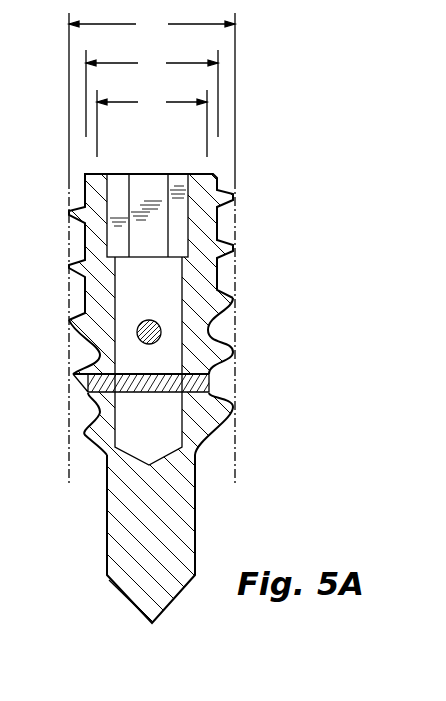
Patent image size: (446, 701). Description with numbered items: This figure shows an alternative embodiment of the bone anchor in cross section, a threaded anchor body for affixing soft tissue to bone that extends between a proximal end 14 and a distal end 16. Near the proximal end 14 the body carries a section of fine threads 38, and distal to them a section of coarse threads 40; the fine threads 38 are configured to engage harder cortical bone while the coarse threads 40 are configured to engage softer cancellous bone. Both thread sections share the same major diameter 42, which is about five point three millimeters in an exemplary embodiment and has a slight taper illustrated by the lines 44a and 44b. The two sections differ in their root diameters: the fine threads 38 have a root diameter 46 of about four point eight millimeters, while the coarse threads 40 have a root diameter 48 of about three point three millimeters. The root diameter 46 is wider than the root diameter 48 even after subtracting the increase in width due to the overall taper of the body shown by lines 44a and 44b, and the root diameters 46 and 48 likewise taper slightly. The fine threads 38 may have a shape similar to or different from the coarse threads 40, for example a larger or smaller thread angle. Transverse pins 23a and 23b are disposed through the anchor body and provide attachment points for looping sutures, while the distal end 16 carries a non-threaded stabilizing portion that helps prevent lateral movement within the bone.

The proximal end 14 is at (158, 182).
The distal end 16 is at (152, 624).
The transverse pin 23a is at (135, 393).
The transverse pin 23b is at (150, 344).
The fine threads 38 is at (247, 173).
The coarse threads 40 is at (247, 293).
The major diameter 42 is at (152, 24).
The taper line 44a is at (69, 463).
The taper line 44b is at (237, 468).
The root diameter 46 is at (152, 93).
The root diameter 48 is at (152, 123).